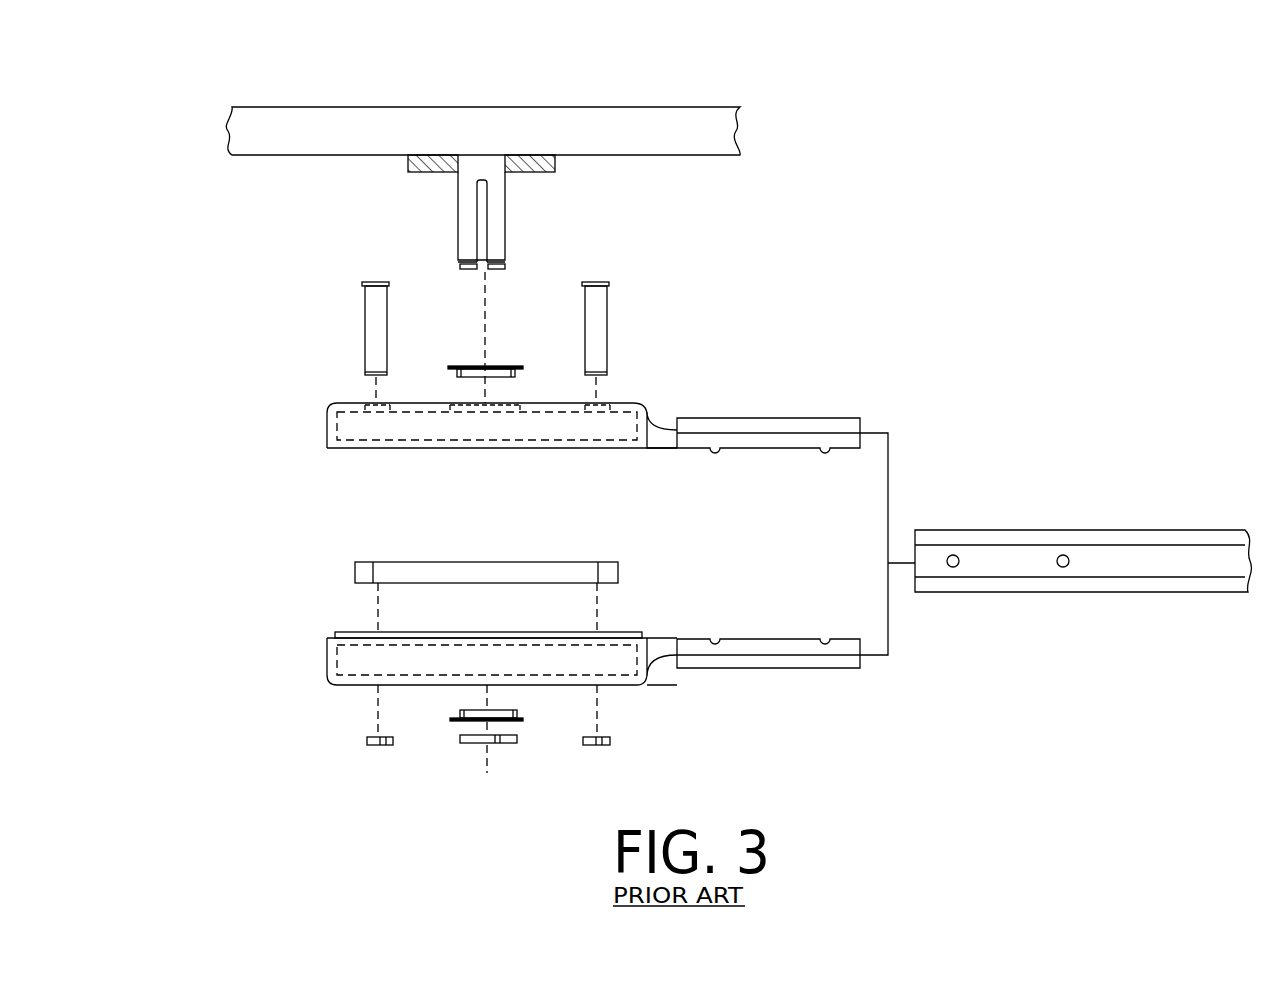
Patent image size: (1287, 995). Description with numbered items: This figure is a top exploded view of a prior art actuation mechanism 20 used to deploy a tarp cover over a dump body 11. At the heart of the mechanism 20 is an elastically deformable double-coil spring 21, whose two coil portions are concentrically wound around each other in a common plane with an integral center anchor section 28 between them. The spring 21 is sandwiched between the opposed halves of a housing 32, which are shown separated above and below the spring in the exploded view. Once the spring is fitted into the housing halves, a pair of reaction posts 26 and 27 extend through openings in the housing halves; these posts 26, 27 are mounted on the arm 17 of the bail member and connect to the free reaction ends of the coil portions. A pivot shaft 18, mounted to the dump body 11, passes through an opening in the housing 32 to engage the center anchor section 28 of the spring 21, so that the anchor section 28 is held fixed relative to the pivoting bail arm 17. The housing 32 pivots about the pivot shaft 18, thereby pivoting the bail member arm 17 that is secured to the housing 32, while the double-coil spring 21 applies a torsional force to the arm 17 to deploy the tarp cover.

The dump body 11 is at (733, 107).
The actuation mechanism 20 is at (910, 183).
The pivot shaft 18 is at (507, 207).
The reaction post 26 is at (365, 305).
The reaction post 27 is at (607, 300).
The arm 17 is at (1090, 530).
The double-coil spring 21 is at (422, 562).
The center anchor section 28 is at (492, 560).
The housing 32 is at (213, 450).